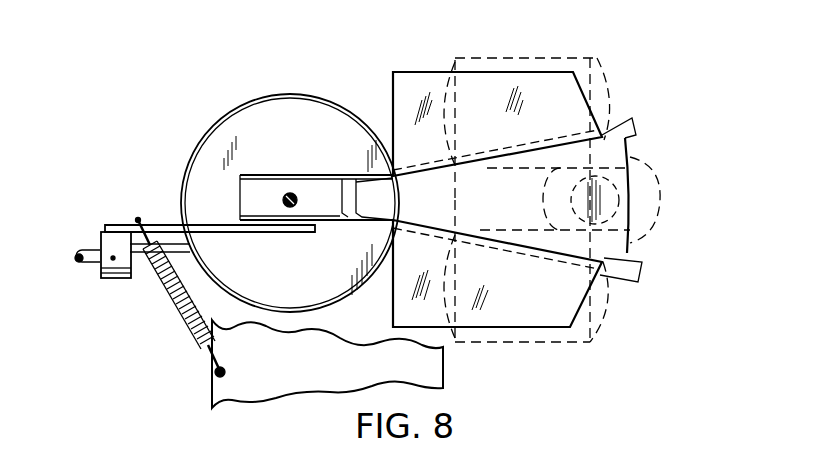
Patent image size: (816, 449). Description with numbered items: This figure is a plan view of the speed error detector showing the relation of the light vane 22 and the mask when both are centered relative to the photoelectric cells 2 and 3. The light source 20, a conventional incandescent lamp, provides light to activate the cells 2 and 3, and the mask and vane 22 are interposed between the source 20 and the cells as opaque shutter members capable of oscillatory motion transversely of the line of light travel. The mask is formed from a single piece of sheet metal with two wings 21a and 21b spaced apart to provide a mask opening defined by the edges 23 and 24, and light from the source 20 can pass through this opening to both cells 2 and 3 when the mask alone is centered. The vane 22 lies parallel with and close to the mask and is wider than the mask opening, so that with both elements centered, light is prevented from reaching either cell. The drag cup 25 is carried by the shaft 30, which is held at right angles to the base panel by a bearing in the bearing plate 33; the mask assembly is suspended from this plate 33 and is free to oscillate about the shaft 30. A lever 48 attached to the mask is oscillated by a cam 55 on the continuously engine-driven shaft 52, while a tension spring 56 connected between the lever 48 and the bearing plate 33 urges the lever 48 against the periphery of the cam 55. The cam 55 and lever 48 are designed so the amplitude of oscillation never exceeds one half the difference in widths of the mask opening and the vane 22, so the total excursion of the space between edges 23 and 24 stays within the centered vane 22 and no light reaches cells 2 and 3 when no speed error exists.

The photoelectric cell 2 is at (523, 58).
The photoelectric cell 3 is at (541, 346).
The light source 20 is at (650, 197).
The wing of mask 21a is at (483, 305).
The wing of mask 21b is at (487, 130).
The light vane 22 is at (494, 207).
The edge of mask opening 23 is at (496, 238).
The edge of mask opening 24 is at (512, 160).
The drag cup 25 is at (219, 154).
The shaft 30 is at (290, 193).
The bearing plate 33 is at (302, 381).
The lever 48 is at (168, 224).
The shaft 52 is at (85, 249).
The cam 55 is at (113, 280).
The tension spring 56 is at (178, 306).